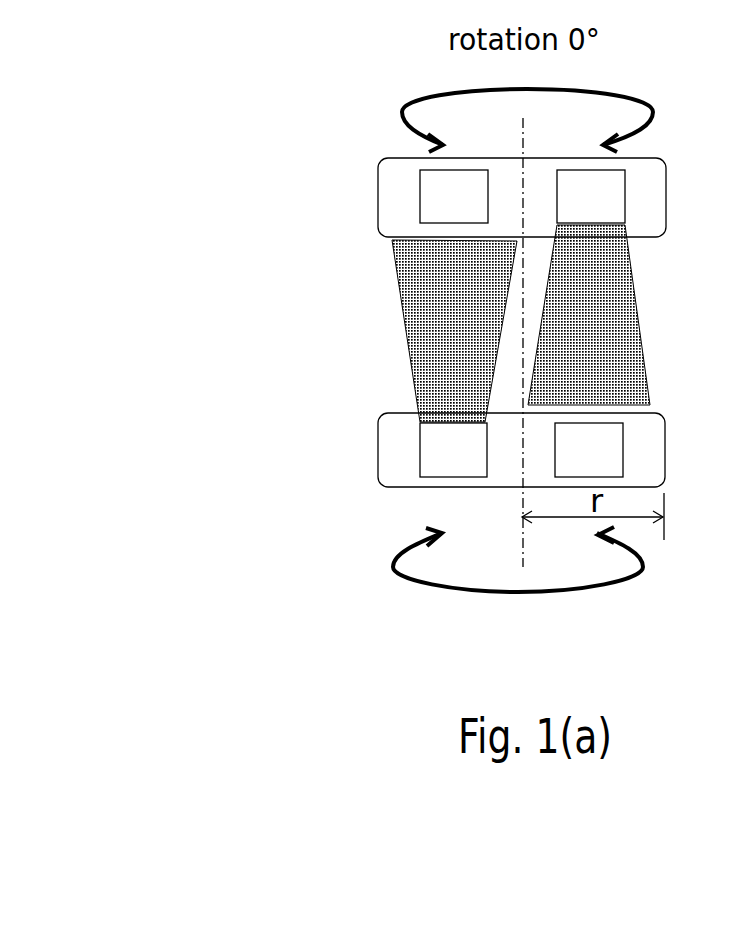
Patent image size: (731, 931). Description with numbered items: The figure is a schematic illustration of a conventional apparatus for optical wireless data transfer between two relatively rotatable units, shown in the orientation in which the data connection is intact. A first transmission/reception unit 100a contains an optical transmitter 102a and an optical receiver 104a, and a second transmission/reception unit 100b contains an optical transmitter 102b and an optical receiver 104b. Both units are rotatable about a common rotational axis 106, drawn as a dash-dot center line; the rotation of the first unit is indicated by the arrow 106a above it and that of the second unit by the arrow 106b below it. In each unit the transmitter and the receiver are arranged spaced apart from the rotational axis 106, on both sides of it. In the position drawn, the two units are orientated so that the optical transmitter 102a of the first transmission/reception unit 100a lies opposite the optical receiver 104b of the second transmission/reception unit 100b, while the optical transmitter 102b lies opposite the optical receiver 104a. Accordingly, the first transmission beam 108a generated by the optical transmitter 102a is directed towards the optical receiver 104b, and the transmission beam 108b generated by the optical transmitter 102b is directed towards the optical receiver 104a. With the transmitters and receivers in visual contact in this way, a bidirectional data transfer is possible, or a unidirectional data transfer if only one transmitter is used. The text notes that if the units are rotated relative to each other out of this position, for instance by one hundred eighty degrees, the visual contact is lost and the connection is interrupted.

The first transmission/reception unit 100a is at (380, 163).
The second transmission/reception unit 100b is at (388, 420).
The optical transmitter 102a is at (517, 177).
The optical transmitter 102b is at (423, 438).
The optical receiver 104a is at (432, 197).
The optical receiver 104b is at (567, 460).
The rotational axis 106 is at (515, 508).
The arrow 106a is at (640, 100).
The arrow 106b is at (637, 580).
The first transmission beam 108a is at (560, 355).
The transmission beam 108b is at (417, 272).